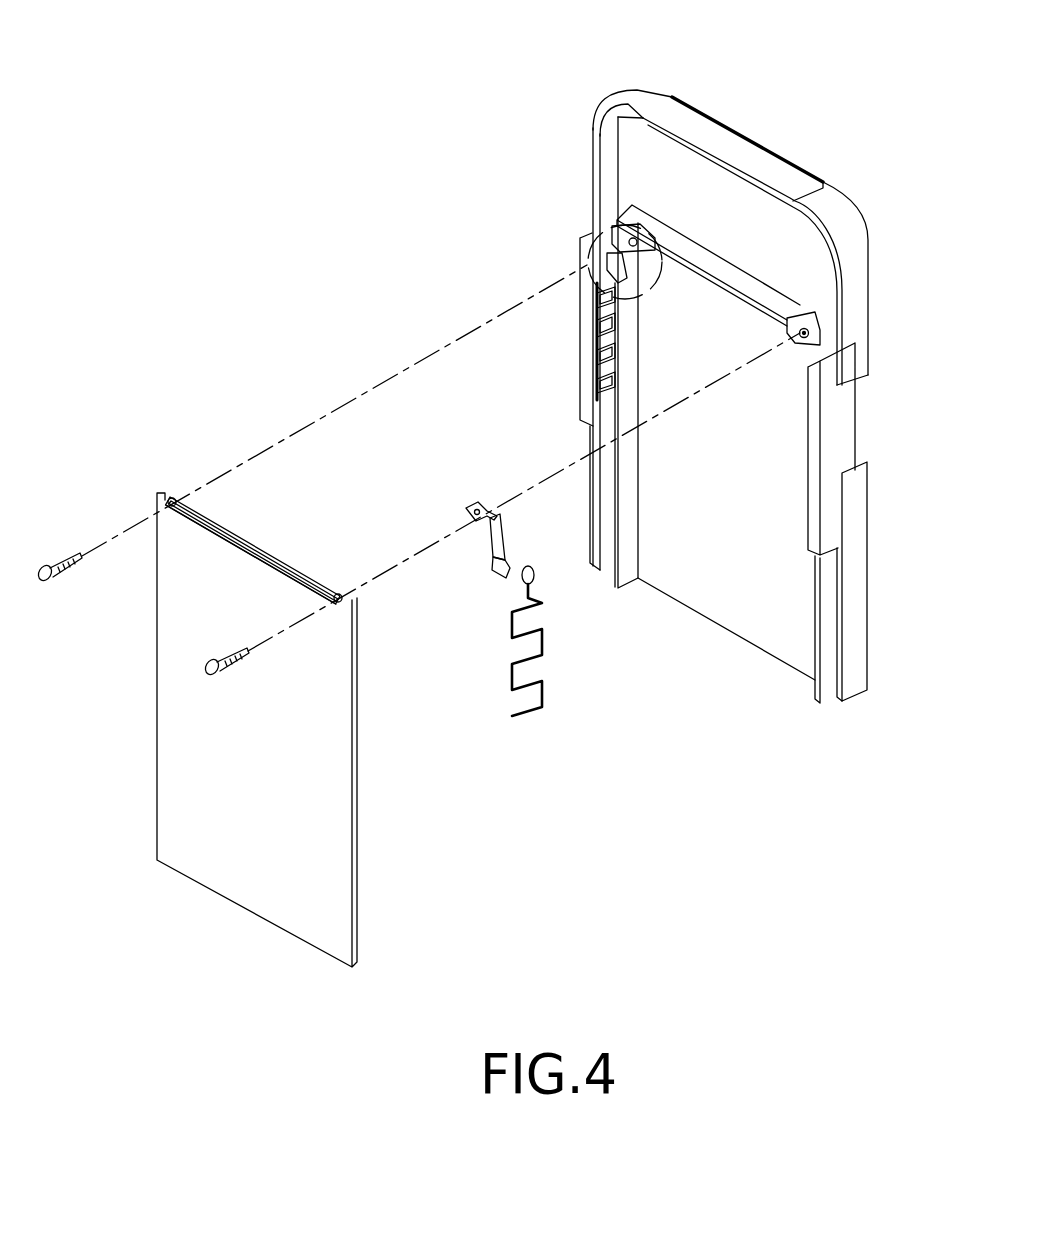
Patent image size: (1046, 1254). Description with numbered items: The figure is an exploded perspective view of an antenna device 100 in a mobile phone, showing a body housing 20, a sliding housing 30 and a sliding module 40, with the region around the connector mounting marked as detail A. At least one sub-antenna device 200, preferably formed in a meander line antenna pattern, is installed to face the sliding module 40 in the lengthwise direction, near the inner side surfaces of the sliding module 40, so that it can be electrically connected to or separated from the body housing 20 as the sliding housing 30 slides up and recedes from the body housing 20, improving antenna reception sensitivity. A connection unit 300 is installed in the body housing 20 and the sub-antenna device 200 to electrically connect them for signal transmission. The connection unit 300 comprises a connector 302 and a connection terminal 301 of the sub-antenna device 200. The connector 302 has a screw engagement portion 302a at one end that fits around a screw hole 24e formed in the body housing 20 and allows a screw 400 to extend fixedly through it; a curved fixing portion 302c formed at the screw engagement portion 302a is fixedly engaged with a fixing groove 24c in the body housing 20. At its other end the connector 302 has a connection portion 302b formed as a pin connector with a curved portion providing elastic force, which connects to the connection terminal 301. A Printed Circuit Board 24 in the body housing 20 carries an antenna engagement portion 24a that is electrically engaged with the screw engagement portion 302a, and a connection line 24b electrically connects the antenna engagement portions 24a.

The sliding housing 30 is at (743, 133).
The body housing 20 is at (867, 593).
The sliding module 40 is at (856, 418).
The Printed Circuit Board (PCB) 24 is at (357, 893).
The antenna engagement portion 24a is at (340, 593).
The connection line 24b is at (223, 557).
The fixing groove 24c is at (790, 322).
The screw hole 24e is at (812, 313).
The screw 400 is at (207, 669).
The connection unit 300 is at (472, 563).
The connection terminal 301 is at (523, 583).
The connector 302 is at (473, 513).
The screw engagement portion 302a is at (484, 508).
The connection portion 302b is at (503, 557).
The curved fixing portion 302c is at (468, 507).
The sub-antenna device 200 is at (505, 679).
The grounding structure 100 is at (556, 718).
The detail region A is at (587, 233).